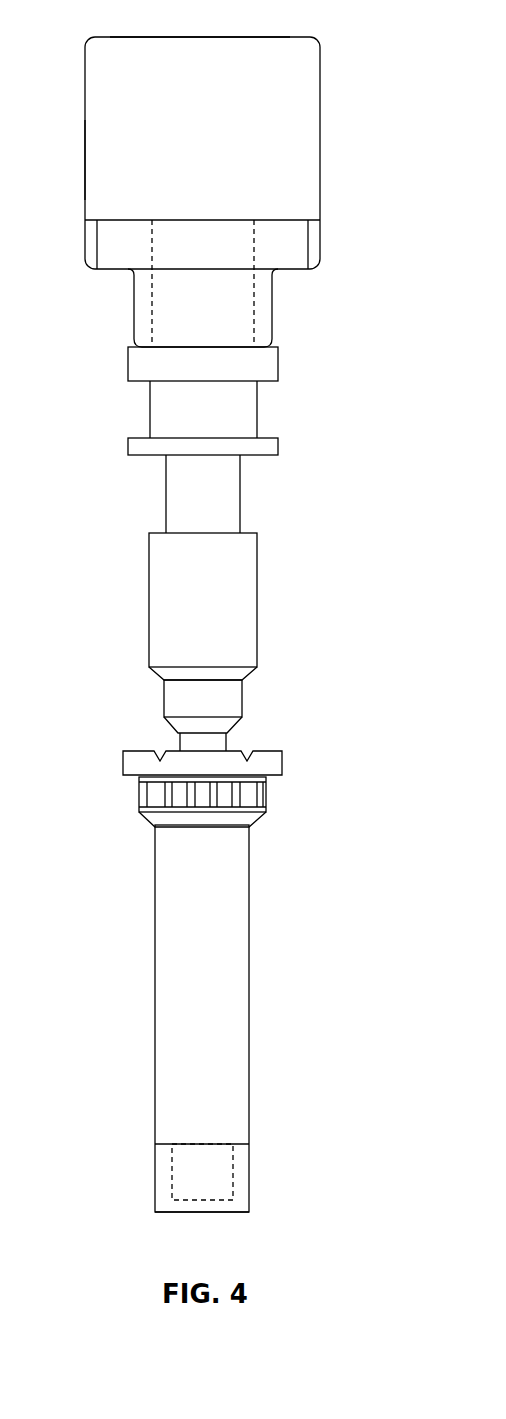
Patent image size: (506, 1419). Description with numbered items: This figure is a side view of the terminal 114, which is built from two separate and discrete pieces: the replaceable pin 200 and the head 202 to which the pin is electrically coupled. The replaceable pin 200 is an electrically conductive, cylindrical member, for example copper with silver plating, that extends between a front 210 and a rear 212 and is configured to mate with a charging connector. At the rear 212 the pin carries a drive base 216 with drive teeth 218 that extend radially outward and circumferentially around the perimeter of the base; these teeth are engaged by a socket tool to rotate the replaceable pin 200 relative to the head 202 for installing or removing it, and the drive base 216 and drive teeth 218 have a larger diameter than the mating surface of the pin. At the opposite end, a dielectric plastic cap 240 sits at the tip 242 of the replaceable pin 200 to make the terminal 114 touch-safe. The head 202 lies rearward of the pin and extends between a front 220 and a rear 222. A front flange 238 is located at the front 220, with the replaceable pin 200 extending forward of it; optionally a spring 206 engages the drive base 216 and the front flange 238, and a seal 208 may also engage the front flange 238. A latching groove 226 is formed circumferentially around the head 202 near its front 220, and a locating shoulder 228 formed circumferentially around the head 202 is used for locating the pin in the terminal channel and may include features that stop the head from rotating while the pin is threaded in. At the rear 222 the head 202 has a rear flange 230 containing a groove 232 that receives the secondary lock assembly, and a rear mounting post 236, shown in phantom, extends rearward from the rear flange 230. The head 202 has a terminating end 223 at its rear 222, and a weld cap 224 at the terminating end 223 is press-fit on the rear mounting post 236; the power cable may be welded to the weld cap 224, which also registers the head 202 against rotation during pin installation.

The terminal 114 is at (360, 170).
The replaceable pin 200 is at (238, 1013).
The head 202 is at (243, 597).
The spring 206 is at (268, 782).
The seal 208 is at (267, 778).
The front 210 is at (230, 1213).
The rear 212 is at (152, 781).
The drive base 216 is at (150, 808).
The drive teeth 218 is at (185, 795).
The front 220 is at (232, 780).
The rear 222 is at (263, 37).
The terminating end 223 is at (163, 31).
The weld cap 224 is at (112, 142).
The latching groove 226 is at (252, 740).
The locating shoulder 228 is at (247, 675).
The rear flange 230 is at (278, 362).
The groove 232 is at (275, 412).
The rear mounting post 236 is at (163, 303).
The front flange 238 is at (133, 763).
The cap 240 is at (240, 1160).
The tip 242 is at (200, 1202).